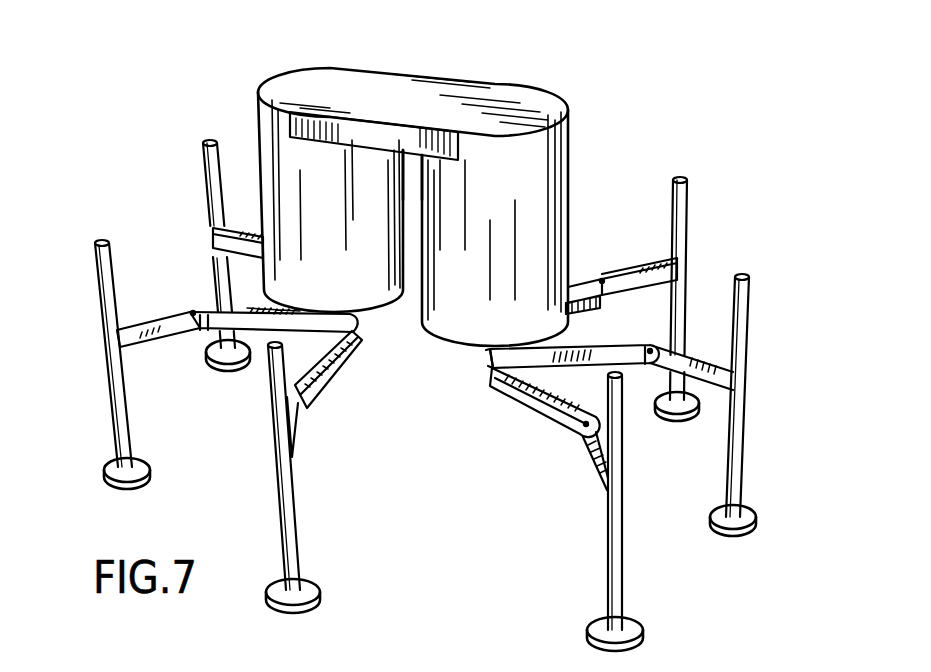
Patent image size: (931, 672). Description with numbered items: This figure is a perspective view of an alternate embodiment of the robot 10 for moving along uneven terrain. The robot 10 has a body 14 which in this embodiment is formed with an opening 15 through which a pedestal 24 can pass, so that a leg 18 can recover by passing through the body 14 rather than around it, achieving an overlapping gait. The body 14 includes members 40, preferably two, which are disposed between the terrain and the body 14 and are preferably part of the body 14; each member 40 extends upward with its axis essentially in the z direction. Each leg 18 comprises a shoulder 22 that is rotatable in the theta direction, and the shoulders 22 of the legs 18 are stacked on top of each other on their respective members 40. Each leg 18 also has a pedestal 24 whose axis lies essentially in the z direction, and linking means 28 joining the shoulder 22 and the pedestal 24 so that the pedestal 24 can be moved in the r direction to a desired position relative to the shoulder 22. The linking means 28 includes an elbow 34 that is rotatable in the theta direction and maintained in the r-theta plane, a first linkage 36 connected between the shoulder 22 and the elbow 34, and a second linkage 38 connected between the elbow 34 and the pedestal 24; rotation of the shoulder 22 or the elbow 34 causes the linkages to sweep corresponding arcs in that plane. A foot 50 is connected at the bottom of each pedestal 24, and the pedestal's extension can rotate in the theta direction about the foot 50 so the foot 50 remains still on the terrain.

The robot 10 is at (637, 78).
The body 14 is at (463, 77).
The opening 15 is at (412, 262).
The leg 18 is at (97, 304).
The shoulder 22 is at (356, 323).
The pedestal 24 is at (206, 189).
The linking means 28 is at (186, 340).
The elbow 34 is at (194, 313).
The first linkage 36 is at (258, 337).
The second linkage 38 is at (154, 318).
The member 40 is at (347, 368).
The foot 50 is at (318, 578).